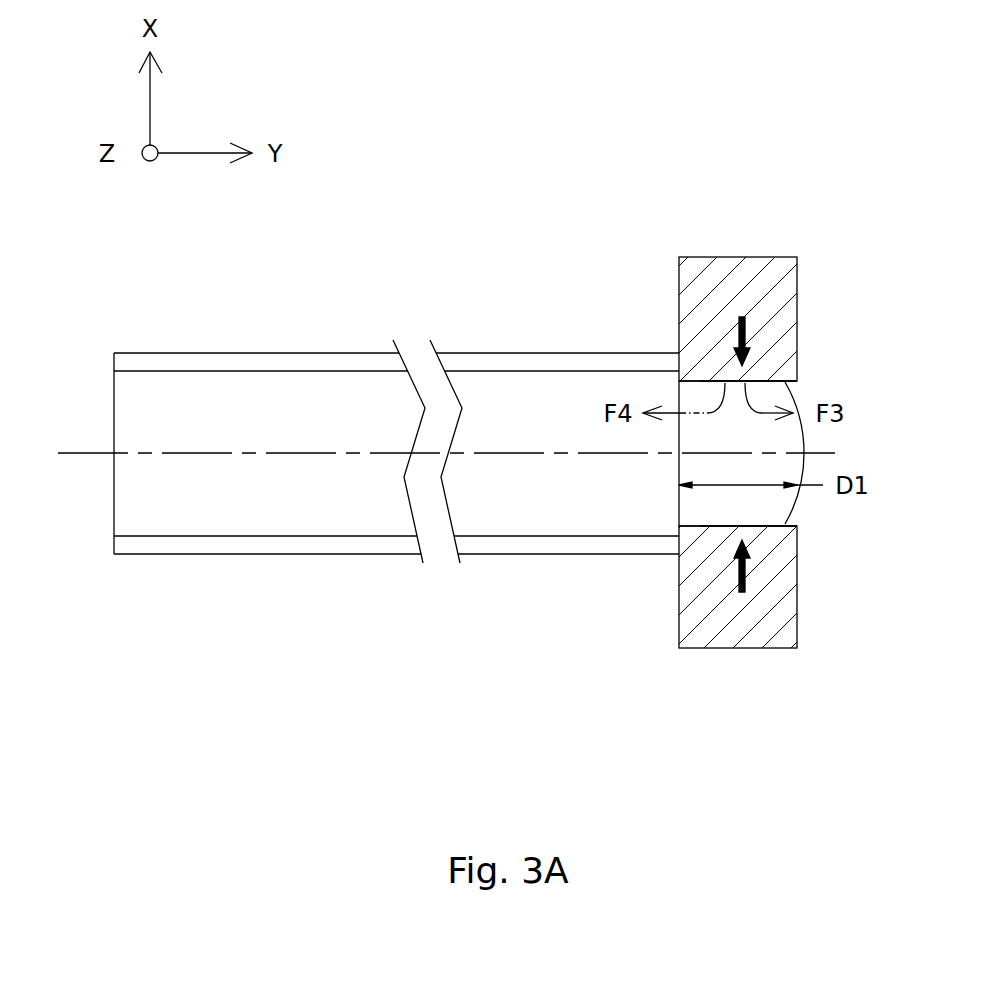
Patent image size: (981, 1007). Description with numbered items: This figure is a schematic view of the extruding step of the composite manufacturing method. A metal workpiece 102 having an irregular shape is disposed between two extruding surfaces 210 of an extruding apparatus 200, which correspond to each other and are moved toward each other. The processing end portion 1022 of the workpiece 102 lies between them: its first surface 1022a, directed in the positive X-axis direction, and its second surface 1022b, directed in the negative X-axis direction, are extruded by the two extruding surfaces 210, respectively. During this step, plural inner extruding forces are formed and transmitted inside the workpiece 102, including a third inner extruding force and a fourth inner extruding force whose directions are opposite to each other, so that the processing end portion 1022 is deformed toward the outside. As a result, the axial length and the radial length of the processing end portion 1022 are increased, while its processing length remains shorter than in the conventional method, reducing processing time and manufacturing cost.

The workpiece 102 is at (257, 353).
The extruding apparatus 200 is at (797, 298).
The extruding surfaces 210 is at (710, 381).
The processing end portion 1022 is at (788, 437).
The first surface 1022a is at (768, 381).
The second surface 1022b is at (753, 526).